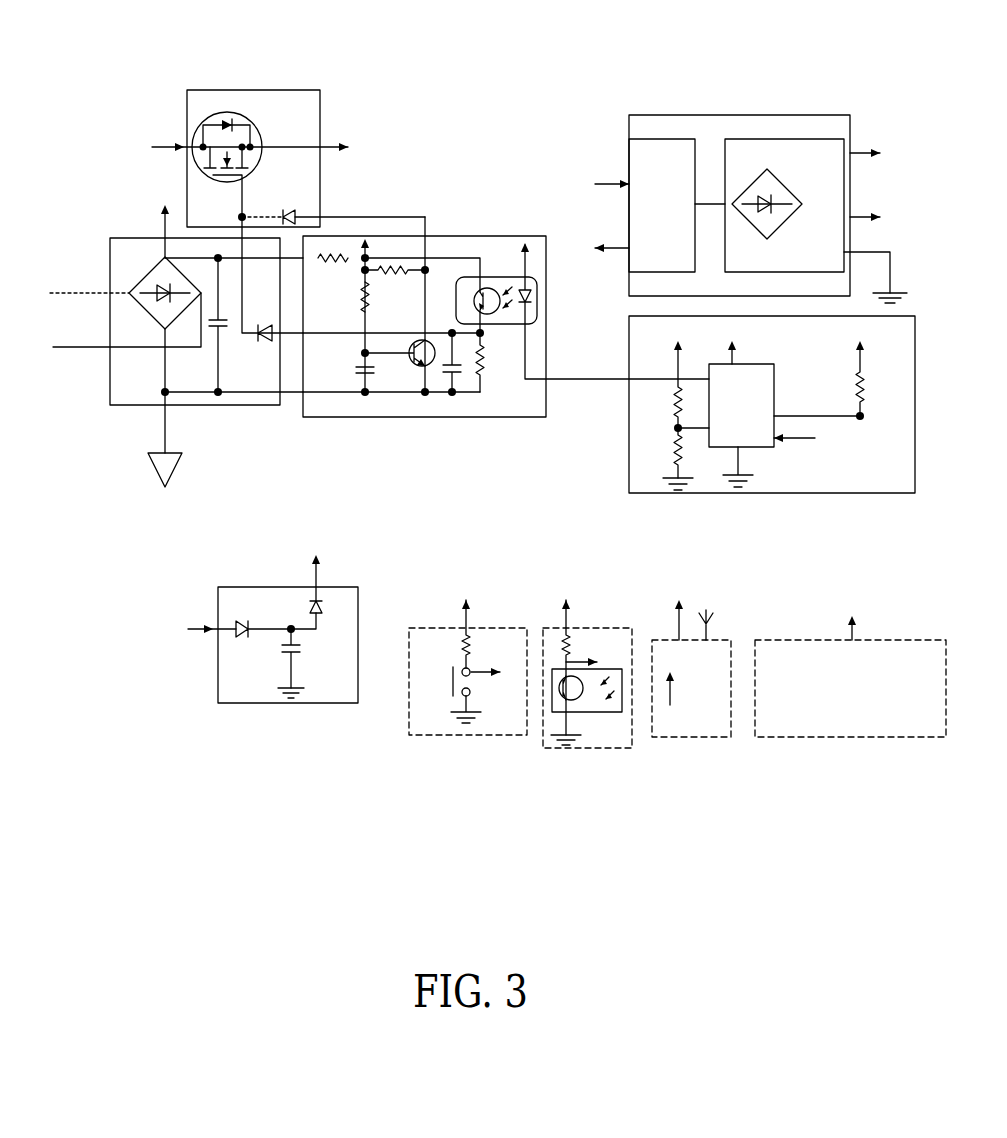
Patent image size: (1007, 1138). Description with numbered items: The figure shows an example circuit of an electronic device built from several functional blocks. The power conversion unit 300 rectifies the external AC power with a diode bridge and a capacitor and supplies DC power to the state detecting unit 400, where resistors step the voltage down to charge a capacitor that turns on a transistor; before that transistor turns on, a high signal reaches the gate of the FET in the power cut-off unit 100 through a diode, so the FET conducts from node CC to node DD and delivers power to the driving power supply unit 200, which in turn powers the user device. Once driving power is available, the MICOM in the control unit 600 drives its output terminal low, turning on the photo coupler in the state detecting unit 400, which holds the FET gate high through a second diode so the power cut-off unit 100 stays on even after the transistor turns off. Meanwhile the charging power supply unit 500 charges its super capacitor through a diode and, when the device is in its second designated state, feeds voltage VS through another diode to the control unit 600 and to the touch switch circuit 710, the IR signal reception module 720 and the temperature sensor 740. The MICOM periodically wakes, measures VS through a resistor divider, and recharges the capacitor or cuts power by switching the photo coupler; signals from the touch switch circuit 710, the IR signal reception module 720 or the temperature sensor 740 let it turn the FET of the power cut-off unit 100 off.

The power cut-off unit 100 is at (252, 90).
The driving power supply unit 200 is at (737, 115).
The power conversion unit 300 is at (110, 398).
The state detecting unit 400 is at (431, 420).
The charging power supply unit 500 is at (290, 705).
The control unit 600 is at (783, 495).
The touch switch circuit 710 is at (506, 738).
The IR signal reception module 720 is at (609, 752).
The temperature sensor 740 is at (712, 740).